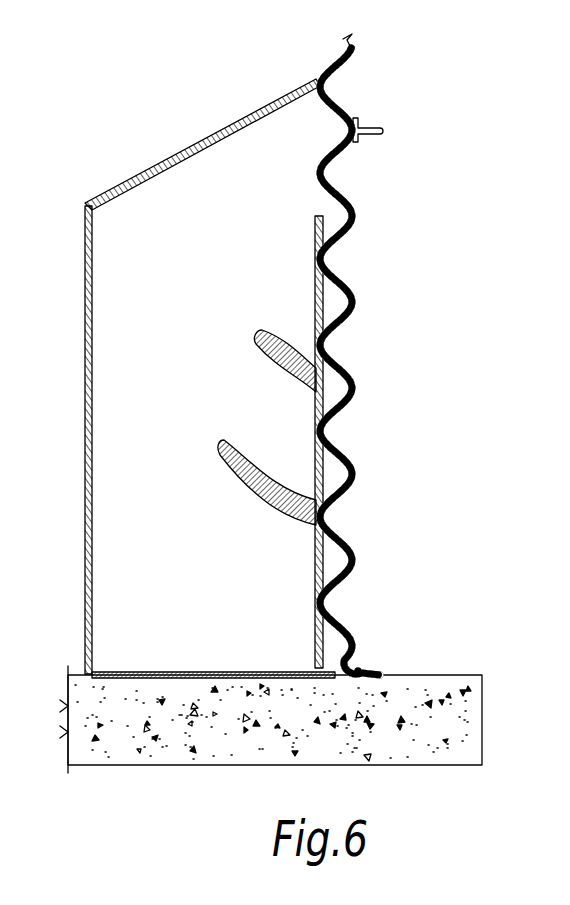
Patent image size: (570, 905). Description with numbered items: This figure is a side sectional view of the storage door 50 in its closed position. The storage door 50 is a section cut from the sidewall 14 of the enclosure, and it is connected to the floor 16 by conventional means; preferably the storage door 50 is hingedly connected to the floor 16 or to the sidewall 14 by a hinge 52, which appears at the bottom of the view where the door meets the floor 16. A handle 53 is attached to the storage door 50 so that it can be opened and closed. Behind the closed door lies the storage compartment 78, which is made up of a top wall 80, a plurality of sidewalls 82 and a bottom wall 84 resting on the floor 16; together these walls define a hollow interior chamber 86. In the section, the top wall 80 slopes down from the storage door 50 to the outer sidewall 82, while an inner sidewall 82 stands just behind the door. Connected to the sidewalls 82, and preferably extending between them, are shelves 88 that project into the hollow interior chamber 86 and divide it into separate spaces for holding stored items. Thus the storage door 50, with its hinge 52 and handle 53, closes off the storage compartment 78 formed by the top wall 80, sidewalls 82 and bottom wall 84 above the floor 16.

The sidewall 14 is at (336, 48).
The floor 16 is at (80, 673).
The storage door 50 is at (392, 268).
The hinge 52 is at (375, 676).
The handle 53 is at (364, 130).
The storage compartment 78 is at (158, 44).
The top wall 80 is at (205, 140).
The sidewall 82 is at (86, 578).
The bottom wall 84 is at (203, 672).
The hollow interior chamber 86 is at (179, 239).
The shelf 88 is at (258, 336).